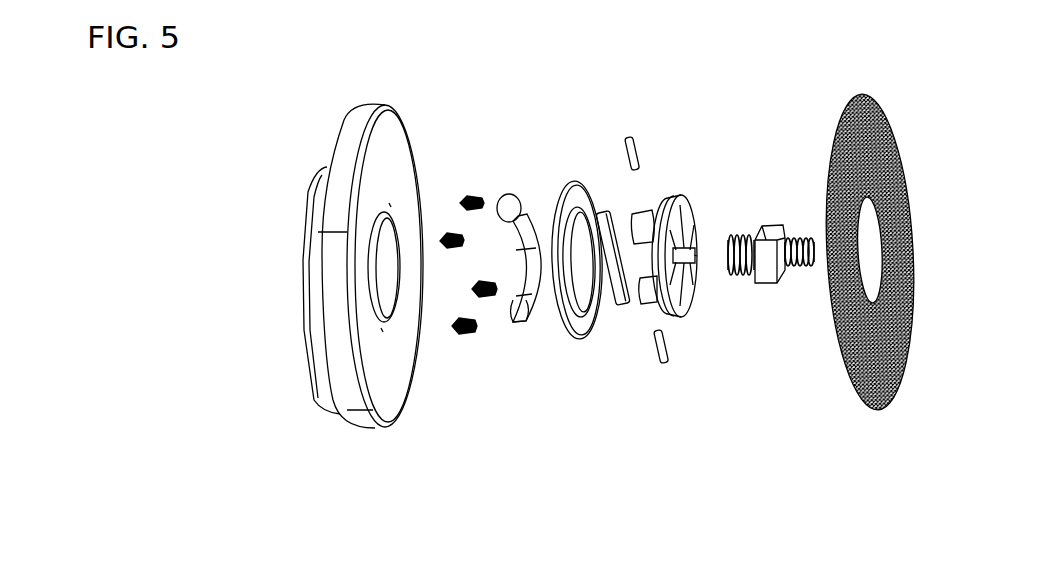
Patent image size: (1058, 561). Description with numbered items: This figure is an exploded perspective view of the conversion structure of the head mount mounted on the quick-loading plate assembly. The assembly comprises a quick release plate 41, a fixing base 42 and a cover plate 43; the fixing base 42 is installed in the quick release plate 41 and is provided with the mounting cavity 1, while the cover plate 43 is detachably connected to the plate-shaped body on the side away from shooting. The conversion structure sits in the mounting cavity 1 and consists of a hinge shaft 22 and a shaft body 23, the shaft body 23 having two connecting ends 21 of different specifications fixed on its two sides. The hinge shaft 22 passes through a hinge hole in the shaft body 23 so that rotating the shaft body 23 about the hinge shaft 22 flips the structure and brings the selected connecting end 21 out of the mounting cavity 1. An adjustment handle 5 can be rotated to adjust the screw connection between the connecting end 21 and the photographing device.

The mounting cavity 1 is at (698, 172).
The adjustment handle 5 is at (528, 192).
The connecting end 21 is at (737, 277).
The hinge shaft 22 is at (610, 210).
The shaft body 23 is at (766, 224).
The quick release plate 41 is at (357, 377).
The fixing base 42 is at (670, 196).
The cover plate 43 is at (590, 340).